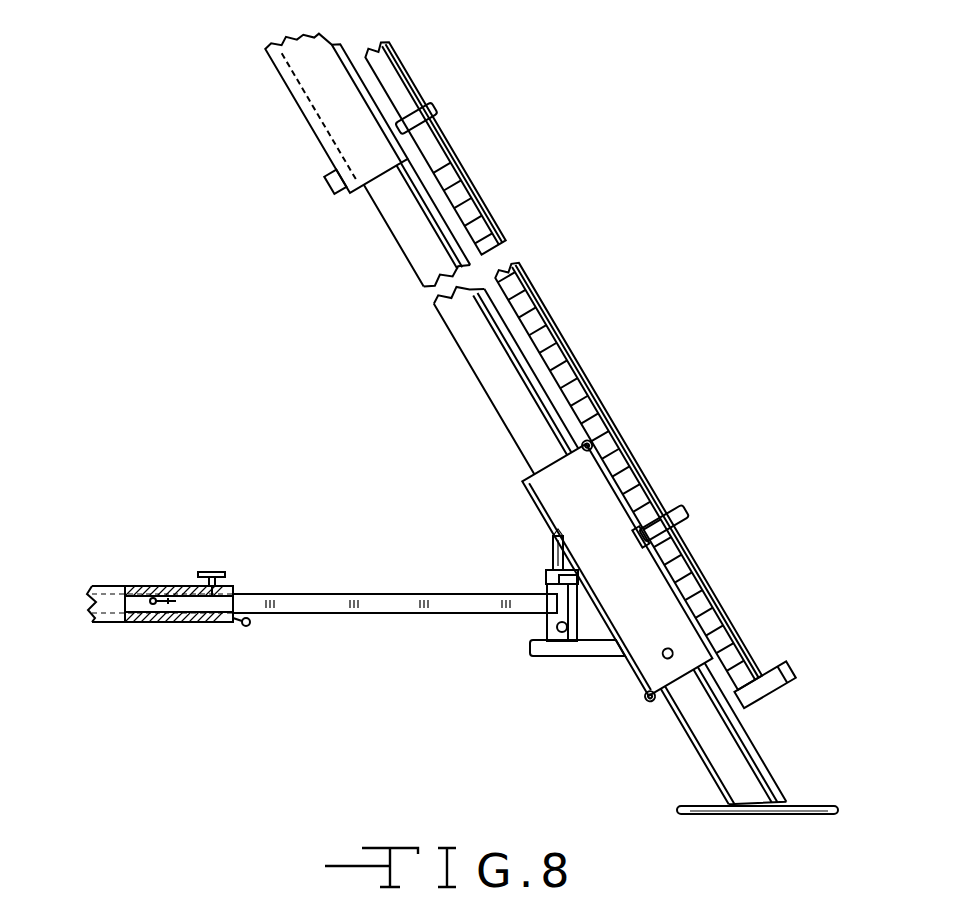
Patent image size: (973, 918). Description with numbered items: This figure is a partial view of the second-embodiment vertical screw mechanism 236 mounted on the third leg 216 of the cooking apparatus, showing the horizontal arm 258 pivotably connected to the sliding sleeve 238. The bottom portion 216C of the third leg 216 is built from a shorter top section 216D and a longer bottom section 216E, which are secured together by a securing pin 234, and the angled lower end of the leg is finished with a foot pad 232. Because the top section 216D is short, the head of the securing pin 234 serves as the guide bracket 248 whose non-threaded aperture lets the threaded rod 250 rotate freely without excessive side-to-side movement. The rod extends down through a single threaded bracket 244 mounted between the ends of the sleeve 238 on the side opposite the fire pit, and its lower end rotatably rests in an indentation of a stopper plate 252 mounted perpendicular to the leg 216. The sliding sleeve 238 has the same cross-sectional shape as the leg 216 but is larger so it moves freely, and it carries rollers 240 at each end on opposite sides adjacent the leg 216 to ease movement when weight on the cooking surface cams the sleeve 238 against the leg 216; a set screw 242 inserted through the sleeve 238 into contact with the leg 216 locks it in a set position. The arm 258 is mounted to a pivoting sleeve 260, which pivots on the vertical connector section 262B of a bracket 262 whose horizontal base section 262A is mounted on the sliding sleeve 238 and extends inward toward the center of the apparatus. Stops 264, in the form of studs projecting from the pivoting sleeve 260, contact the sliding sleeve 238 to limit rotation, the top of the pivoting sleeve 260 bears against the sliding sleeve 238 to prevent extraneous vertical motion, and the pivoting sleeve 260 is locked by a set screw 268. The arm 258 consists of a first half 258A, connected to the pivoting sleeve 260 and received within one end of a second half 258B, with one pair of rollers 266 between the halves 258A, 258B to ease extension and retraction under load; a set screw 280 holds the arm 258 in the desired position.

The third leg 216 is at (468, 348).
The bottom portion 216C is at (410, 232).
The top section 216D is at (313, 124).
The bottom section 216E is at (758, 752).
The base foot 232 is at (838, 810).
The securing pin 234 is at (326, 186).
The screw mechanism 236 is at (566, 346).
The sliding sleeve 238 is at (538, 467).
The rollers 240 is at (593, 443).
The hole 242 is at (676, 652).
The threaded bracket 244 is at (690, 517).
The guide bracket 248 is at (450, 126).
The upper clamp 250 is at (441, 116).
The stopper plate 252 is at (796, 680).
The arm 258 is at (338, 592).
The first half 258A is at (360, 616).
The second half 258B is at (116, 624).
The pivoting sleeve 260 is at (546, 623).
The bracket body 262 is at (548, 656).
The bracket base 262A is at (580, 657).
The connector section 262B is at (547, 572).
The stops 264 is at (553, 562).
The rollers 266 is at (248, 628).
The hole 268 is at (553, 625).
The thumb screw 280 is at (213, 568).